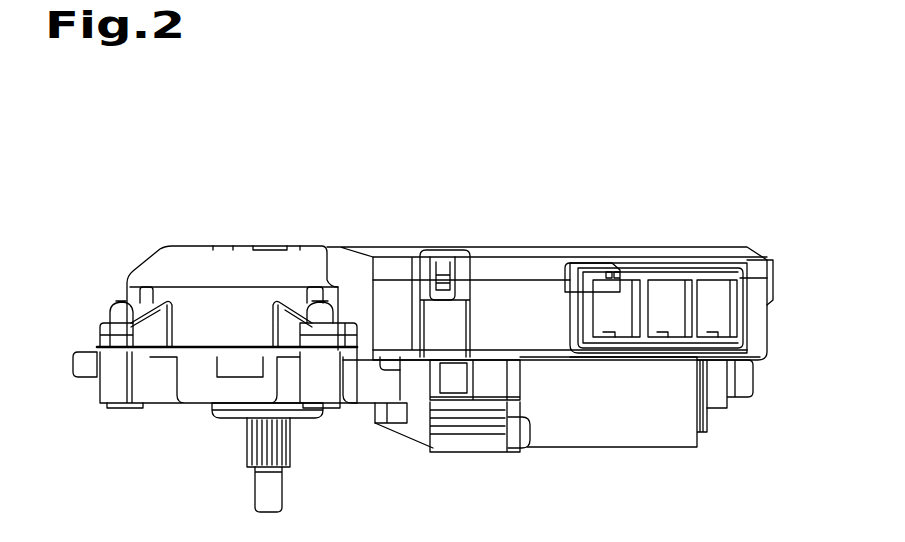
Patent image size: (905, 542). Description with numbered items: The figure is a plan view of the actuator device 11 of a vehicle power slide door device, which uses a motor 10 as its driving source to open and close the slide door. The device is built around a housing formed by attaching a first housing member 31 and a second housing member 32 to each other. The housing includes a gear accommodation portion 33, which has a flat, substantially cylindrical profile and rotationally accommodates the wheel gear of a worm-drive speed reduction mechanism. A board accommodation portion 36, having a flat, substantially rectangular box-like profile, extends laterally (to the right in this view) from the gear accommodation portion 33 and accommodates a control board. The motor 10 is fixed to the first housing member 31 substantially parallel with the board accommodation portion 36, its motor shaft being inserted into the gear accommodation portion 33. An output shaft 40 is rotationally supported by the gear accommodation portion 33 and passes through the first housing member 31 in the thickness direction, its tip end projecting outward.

The actuator device 11 is at (121, 156).
The motor 10 is at (700, 447).
The first housing member 31 is at (148, 405).
The second housing member 32 is at (405, 250).
The gear accommodation portion 33 is at (357, 385).
The board accommodation portion 36 is at (548, 264).
The output shaft 40 is at (283, 492).